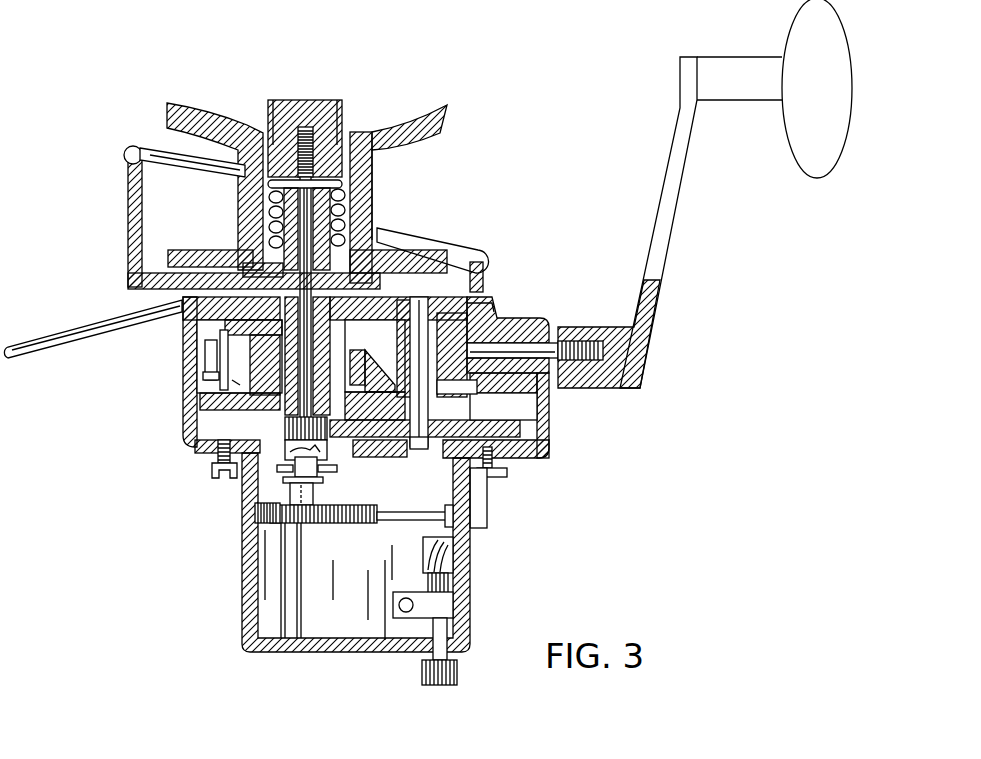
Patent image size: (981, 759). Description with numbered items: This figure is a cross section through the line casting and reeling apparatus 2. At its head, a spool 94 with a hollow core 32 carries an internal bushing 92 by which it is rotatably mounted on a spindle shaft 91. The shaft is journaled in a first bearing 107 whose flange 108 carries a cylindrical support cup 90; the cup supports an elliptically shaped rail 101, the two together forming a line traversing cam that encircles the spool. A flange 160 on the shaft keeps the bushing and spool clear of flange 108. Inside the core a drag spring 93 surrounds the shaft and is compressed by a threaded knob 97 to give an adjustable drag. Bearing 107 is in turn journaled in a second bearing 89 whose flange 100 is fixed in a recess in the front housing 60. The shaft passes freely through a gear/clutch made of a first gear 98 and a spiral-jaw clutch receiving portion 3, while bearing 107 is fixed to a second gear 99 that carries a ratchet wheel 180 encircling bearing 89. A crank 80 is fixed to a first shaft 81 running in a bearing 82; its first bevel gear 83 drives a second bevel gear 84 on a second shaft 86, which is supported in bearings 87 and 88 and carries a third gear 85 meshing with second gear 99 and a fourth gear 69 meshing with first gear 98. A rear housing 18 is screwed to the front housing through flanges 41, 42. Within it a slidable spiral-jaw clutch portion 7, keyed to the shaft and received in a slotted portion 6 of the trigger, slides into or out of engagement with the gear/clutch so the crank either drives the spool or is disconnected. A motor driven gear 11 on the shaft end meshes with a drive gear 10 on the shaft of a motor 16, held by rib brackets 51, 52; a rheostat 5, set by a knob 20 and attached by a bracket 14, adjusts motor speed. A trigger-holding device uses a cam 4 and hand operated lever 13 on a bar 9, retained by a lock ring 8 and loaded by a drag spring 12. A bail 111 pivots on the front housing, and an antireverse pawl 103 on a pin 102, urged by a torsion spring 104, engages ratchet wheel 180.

The apparatus for line casting and reeling 2 is at (207, 100).
The spiral-jaw clutch receiving portion 3 is at (290, 465).
The cam 4 is at (288, 494).
The rheostat 5 is at (455, 585).
The slotted portion 6 is at (338, 473).
The slidable spiral-jaw clutch portion 7 is at (335, 460).
The lock ring 8 is at (428, 527).
The bar 9 is at (405, 522).
The drive gear 10 is at (338, 523).
The motor driven gear 11 is at (300, 523).
The drag spring 12 is at (268, 525).
The hand operated lever 13 is at (487, 495).
The bracket 14 is at (450, 608).
The permanent magnet DC motor 16 is at (310, 632).
The rear housing 18 is at (243, 622).
The knob 20 is at (458, 672).
The hollow core 32 is at (377, 172).
The flange 41 is at (500, 472).
The flange 42 is at (215, 462).
The rib bracket 51 is at (265, 582).
The rib bracket 52 is at (450, 545).
The front housing 60 is at (183, 405).
The fourth gear 69 is at (545, 430).
The crank 80 is at (655, 268).
The first shaft 81 is at (520, 350).
The bearing 82 is at (525, 320).
The first bevel gear 83 is at (470, 307).
The second bevel gear 84 is at (445, 400).
The third gear 85 is at (495, 455).
The second shaft 86 is at (418, 335).
The bearing 87 is at (415, 450).
The bearing 88 is at (400, 333).
The second bearing 89 is at (272, 333).
The cylindrical support cup 90 is at (130, 272).
The spindle shaft 91 is at (303, 130).
The internal bushing 92 is at (335, 245).
The drag spring 93 is at (345, 205).
The spool 94 is at (447, 107).
The knob 97 is at (340, 108).
The first gear 98 is at (283, 428).
The second gear 99 is at (235, 383).
The flange 100 is at (243, 262).
The elliptically shaped rail 101 is at (127, 150).
The pin 102 is at (185, 330).
The second pawl 103 is at (200, 360).
The torsion spring 104 is at (200, 378).
The first bearing 107 is at (245, 220).
The flange 108 is at (270, 250).
The bail 111 is at (60, 350).
The flange 160 is at (400, 247).
The ratchet wheel 180 is at (215, 445).